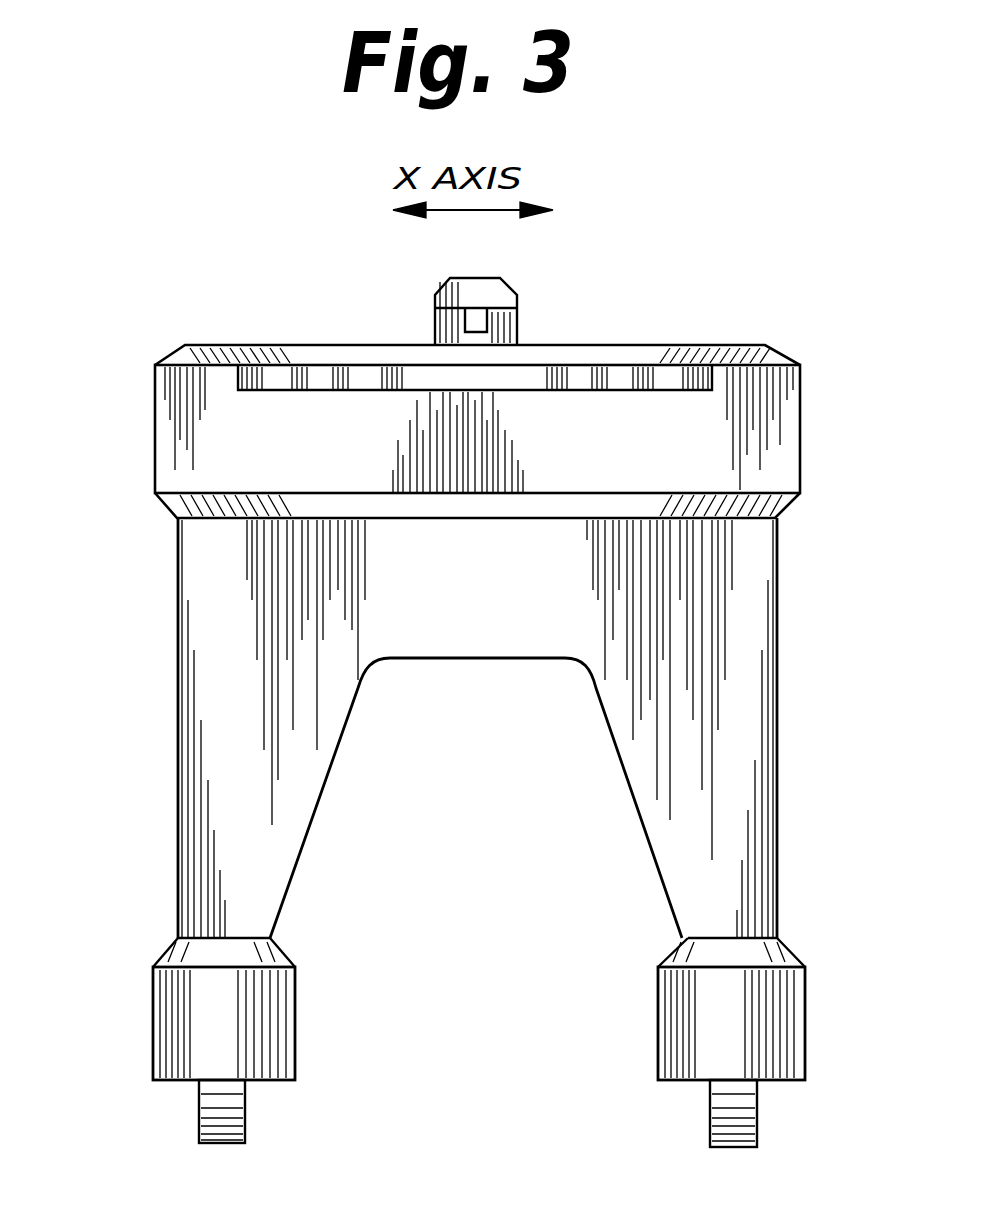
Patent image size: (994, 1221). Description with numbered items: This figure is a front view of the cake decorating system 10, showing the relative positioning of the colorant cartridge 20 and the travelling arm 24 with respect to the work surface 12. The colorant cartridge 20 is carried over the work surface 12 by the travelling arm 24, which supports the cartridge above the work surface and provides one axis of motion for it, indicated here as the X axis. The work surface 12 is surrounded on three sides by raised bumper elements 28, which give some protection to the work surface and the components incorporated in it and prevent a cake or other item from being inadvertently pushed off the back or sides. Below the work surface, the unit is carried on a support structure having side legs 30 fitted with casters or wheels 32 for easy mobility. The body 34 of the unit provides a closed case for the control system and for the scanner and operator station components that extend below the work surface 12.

The cake decorating system 10 is at (799, 418).
The work surface 12 is at (319, 395).
The colorant cartridge 20 is at (497, 320).
The travelling arm 24 is at (508, 282).
The raised bumper elements 28 is at (183, 345).
The side legs 30 is at (763, 813).
The casters or wheels 32 is at (757, 1105).
The body 34 is at (740, 570).